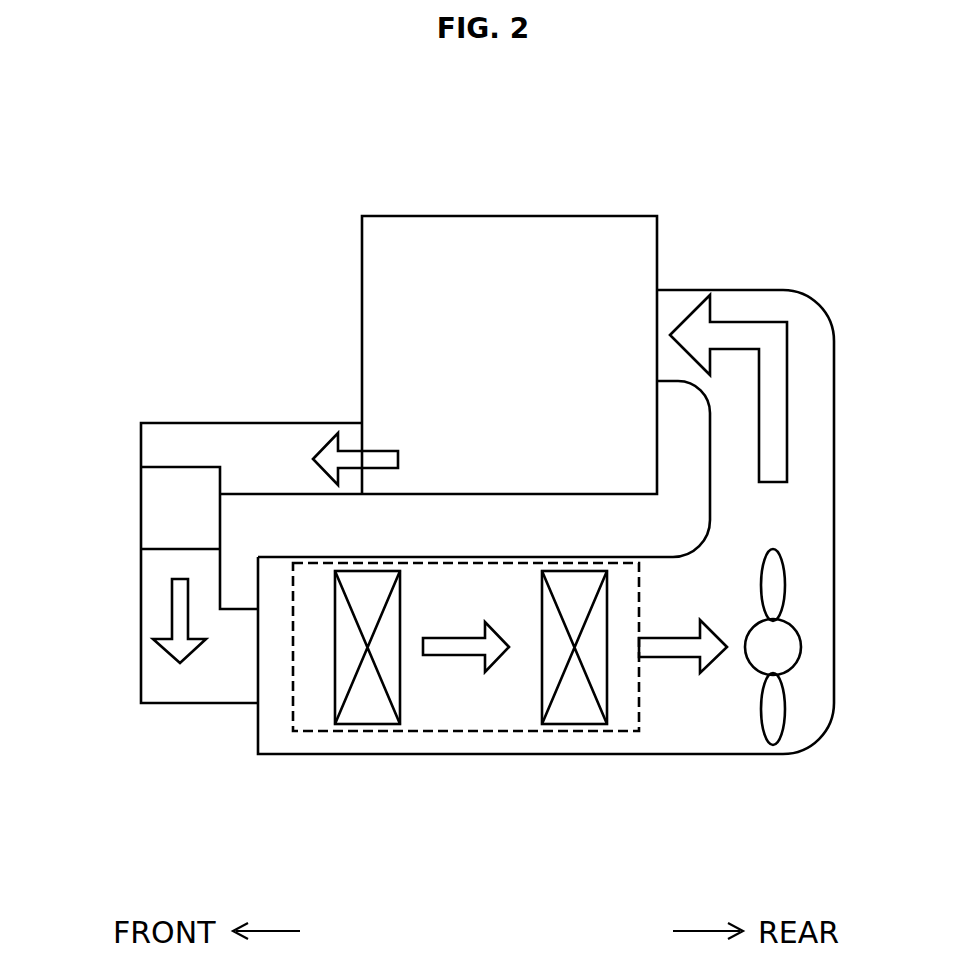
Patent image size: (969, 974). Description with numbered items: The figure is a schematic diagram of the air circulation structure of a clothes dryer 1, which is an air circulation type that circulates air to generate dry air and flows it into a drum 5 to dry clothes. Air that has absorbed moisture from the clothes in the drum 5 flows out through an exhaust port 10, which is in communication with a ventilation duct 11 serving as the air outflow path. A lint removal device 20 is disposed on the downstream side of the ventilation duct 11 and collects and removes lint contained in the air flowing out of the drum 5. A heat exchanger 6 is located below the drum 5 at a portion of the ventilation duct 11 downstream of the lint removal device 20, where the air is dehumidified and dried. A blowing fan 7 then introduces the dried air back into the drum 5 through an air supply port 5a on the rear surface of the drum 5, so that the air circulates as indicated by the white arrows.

The clothes dryer 1 is at (331, 192).
The drum 5 is at (552, 216).
The air supply port 5a is at (643, 318).
The exhaust port 10 is at (362, 438).
The lint removal device 20 is at (152, 502).
The ventilation duct 11 is at (267, 724).
The heat exchanger 6 is at (470, 731).
The blowing fan 7 is at (783, 578).